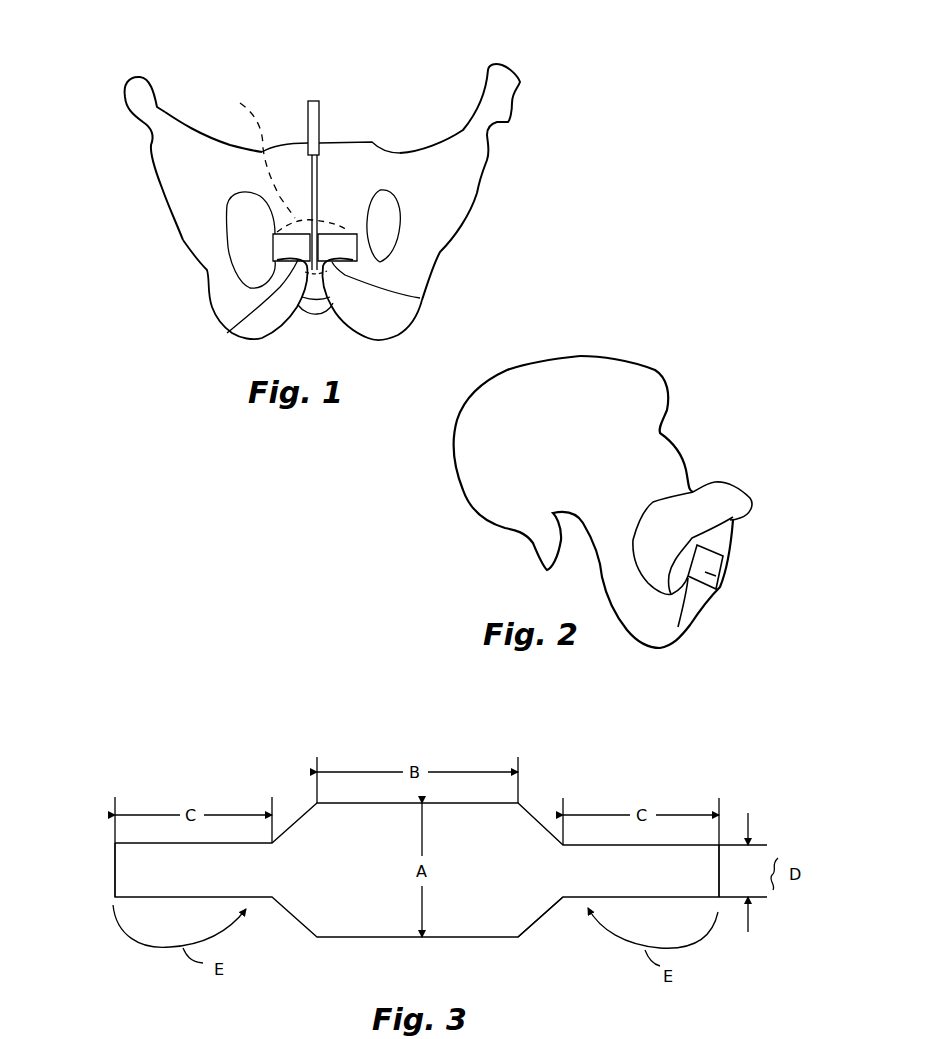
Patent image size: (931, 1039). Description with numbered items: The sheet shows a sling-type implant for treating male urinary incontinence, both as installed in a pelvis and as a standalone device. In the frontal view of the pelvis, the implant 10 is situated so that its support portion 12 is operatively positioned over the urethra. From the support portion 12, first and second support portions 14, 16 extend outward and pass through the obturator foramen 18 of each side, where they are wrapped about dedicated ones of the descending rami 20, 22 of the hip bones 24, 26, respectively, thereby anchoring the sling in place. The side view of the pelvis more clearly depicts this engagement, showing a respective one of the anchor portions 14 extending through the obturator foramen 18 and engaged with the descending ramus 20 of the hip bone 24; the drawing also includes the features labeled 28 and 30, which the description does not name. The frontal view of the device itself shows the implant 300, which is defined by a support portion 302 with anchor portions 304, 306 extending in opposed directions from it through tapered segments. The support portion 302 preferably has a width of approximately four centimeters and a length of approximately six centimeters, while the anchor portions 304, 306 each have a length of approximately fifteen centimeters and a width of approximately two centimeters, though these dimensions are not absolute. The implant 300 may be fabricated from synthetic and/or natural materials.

In FIG. 1, the implant 10 is at (329, 210).
In FIG. 1, the support portion 12 is at (306, 157).
In FIG. 1, the first support portion 14 is at (273, 235).
In FIG. 2, the first support portion 14 is at (714, 575).
In FIG. 1, the second support portion 16 is at (340, 247).
In FIG. 1, the obturator foramen 18 is at (253, 218).
In FIG. 2, the obturator foramen 18 is at (700, 555).
In FIG. 1, the descending ramus 20 is at (233, 327).
In FIG. 2, the descending ramus 20 is at (710, 592).
In FIG. 1, the descending ramus 22 is at (420, 298).
In FIG. 1, the hip bone 24 is at (165, 112).
In FIG. 2, the hip bone 24 is at (582, 356).
In FIG. 1, the hip bone 26 is at (457, 177).
In FIG. 1, the coccyx 28 is at (322, 316).
In FIG. 1, the guide pin 30 is at (320, 125).
In FIG. 3, the implant 300 is at (282, 744).
In FIG. 3, the support portion 302 is at (517, 922).
In FIG. 3, the anchor portion 304 is at (113, 867).
In FIG. 3, the anchor portion 306 is at (700, 863).